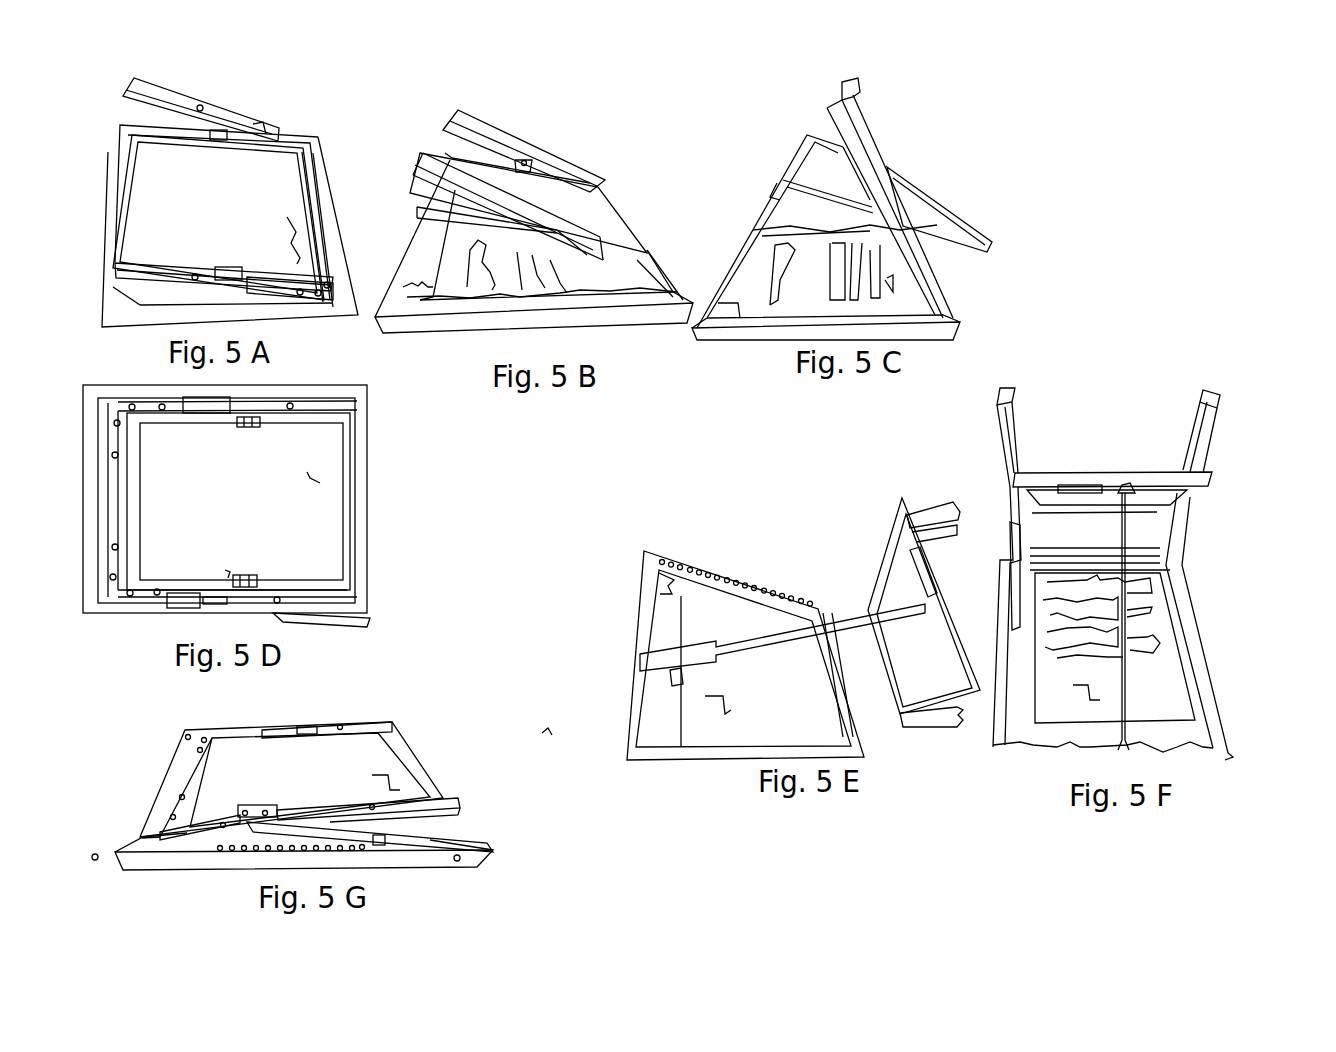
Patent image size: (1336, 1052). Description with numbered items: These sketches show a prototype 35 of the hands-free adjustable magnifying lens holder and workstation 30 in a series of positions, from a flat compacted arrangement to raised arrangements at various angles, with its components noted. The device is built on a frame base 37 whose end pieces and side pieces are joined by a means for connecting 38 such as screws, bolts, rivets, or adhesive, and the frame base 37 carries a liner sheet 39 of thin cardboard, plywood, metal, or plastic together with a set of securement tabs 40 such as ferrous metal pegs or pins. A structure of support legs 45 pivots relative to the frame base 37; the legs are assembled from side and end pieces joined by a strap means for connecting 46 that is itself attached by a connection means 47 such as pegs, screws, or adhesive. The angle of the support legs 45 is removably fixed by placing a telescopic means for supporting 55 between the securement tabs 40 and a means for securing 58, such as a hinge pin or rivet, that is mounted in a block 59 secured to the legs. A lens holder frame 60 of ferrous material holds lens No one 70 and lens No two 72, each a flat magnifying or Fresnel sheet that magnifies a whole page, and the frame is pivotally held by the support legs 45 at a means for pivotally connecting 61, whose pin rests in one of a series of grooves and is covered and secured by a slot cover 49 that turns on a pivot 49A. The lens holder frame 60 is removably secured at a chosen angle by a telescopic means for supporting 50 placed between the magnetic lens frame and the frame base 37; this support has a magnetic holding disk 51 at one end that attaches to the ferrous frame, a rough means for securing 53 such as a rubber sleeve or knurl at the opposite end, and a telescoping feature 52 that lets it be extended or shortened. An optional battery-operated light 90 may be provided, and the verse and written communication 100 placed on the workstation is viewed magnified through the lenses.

In FIG. 5A, the hands-free adjustable magnifying lens holder and workstation 30 is at (203, 192).
In FIG. 5B, the hands-free adjustable magnifying lens holder and workstation 30 is at (534, 226).
In FIG. 5C, the hands-free adjustable magnifying lens holder and workstation 30 is at (888, 204).
In FIG. 5D, the hands-free adjustable magnifying lens holder and workstation 30 is at (278, 491).
In FIG. 5G, the hands-free adjustable magnifying lens holder and workstation 30 is at (343, 764).
In FIG. 5E, the hands-free adjustable magnifying lens holder and workstation 30 is at (775, 678).
In FIG. 5F, the hands-free adjustable magnifying lens holder and workstation 30 is at (1131, 611).
In FIG. 5A, the prototype 35 is at (203, 192).
In FIG. 5B, the prototype 35 is at (534, 226).
In FIG. 5C, the prototype 35 is at (888, 204).
In FIG. 5D, the prototype 35 is at (278, 491).
In FIG. 5G, the prototype 35 is at (343, 764).
In FIG. 5E, the prototype 35 is at (775, 678).
In FIG. 5F, the prototype 35 is at (1131, 611).
In FIG. 5A, the frame base 37 is at (138, 318).
In FIG. 5B, the frame base 37 is at (463, 318).
In FIG. 5C, the frame base 37 is at (945, 337).
In FIG. 5G, the frame base 37 is at (148, 853).
In FIG. 5E, the frame base 37 is at (646, 610).
In FIG. 5G, the means for connecting 38 is at (142, 838).
In FIG. 5B, the liner sheet 39 is at (420, 283).
In FIG. 5C, the liner sheet 39 is at (737, 307).
In FIG. 5E, the liner sheet 39 is at (666, 583).
In FIG. 5F, the liner sheet 39 is at (1025, 729).
In FIG. 5G, the securement tabs 40 is at (290, 837).
In FIG. 5F, the securement tabs 40 is at (1003, 702).
In FIG. 5A, the support legs 45 is at (143, 83).
In FIG. 5B, the support legs 45 is at (463, 120).
In FIG. 5C, the support legs 45 is at (855, 113).
In FIG. 5F, the support legs 45 is at (1211, 427).
In FIG. 5D, the strap means for connecting 46 is at (112, 583).
In FIG. 5D, the connection means 47 is at (113, 547).
In FIG. 5D, the slot cover 49 is at (241, 378).
In FIG. 5G, the slot cover 49 is at (339, 697).
In FIG. 5D, the pivot 49A is at (291, 403).
In FIG. 5G, the means for supporting 50 is at (473, 840).
In FIG. 5E, the means for supporting 50 is at (725, 571).
In FIG. 5F, the magnetic holding disk 51 is at (1186, 493).
In FIG. 5F, the telescoping feature 52 is at (1128, 640).
In FIG. 5F, the means for securing 53 is at (1128, 702).
In FIG. 5G, the means for supporting 55 is at (377, 850).
In FIG. 5E, the means for supporting 55 is at (796, 586).
In FIG. 5G, the means for securing 58 is at (219, 867).
In FIG. 5G, the block 59 is at (255, 818).
In FIG. 5A, the lens holder frame 60 is at (293, 135).
In FIG. 5B, the lens holder frame 60 is at (565, 177).
In FIG. 5C, the lens holder frame 60 is at (890, 209).
In FIG. 5G, the lens holder frame 60 is at (400, 738).
In FIG. 5E, the lens holder frame 60 is at (905, 510).
In FIG. 5F, the lens holder frame 60 is at (1107, 473).
In FIG. 5G, the means for pivotally connecting 61 is at (303, 728).
In FIG. 5A, the lens No 1 70 is at (221, 154).
In FIG. 5B, the lens No 1 70 is at (592, 225).
In FIG. 5C, the lens No 1 70 is at (985, 171).
In FIG. 5D, the lens No 1 70 is at (297, 497).
In FIG. 5G, the lens No 1 70 is at (488, 757).
In FIG. 5E, the lens No 1 70 is at (752, 758).
In FIG. 5A, the lens No 2 72 is at (255, 168).
In FIG. 5C, the lens No 2 72 is at (935, 200).
In FIG. 5D, the lens No 2 72 is at (297, 497).
In FIG. 5G, the lens No 2 72 is at (393, 783).
In FIG. 5E, the lens No 2 72 is at (912, 722).
In FIG. 5E, the optional light 90 is at (931, 583).
In FIG. 5F, the optional light 90 is at (1071, 485).
In FIG. 5D, the verse and written communication 100 is at (312, 477).
In FIG. 5E, the verse and written communication 100 is at (712, 718).
In FIG. 5F, the verse and written communication 100 is at (1084, 690).